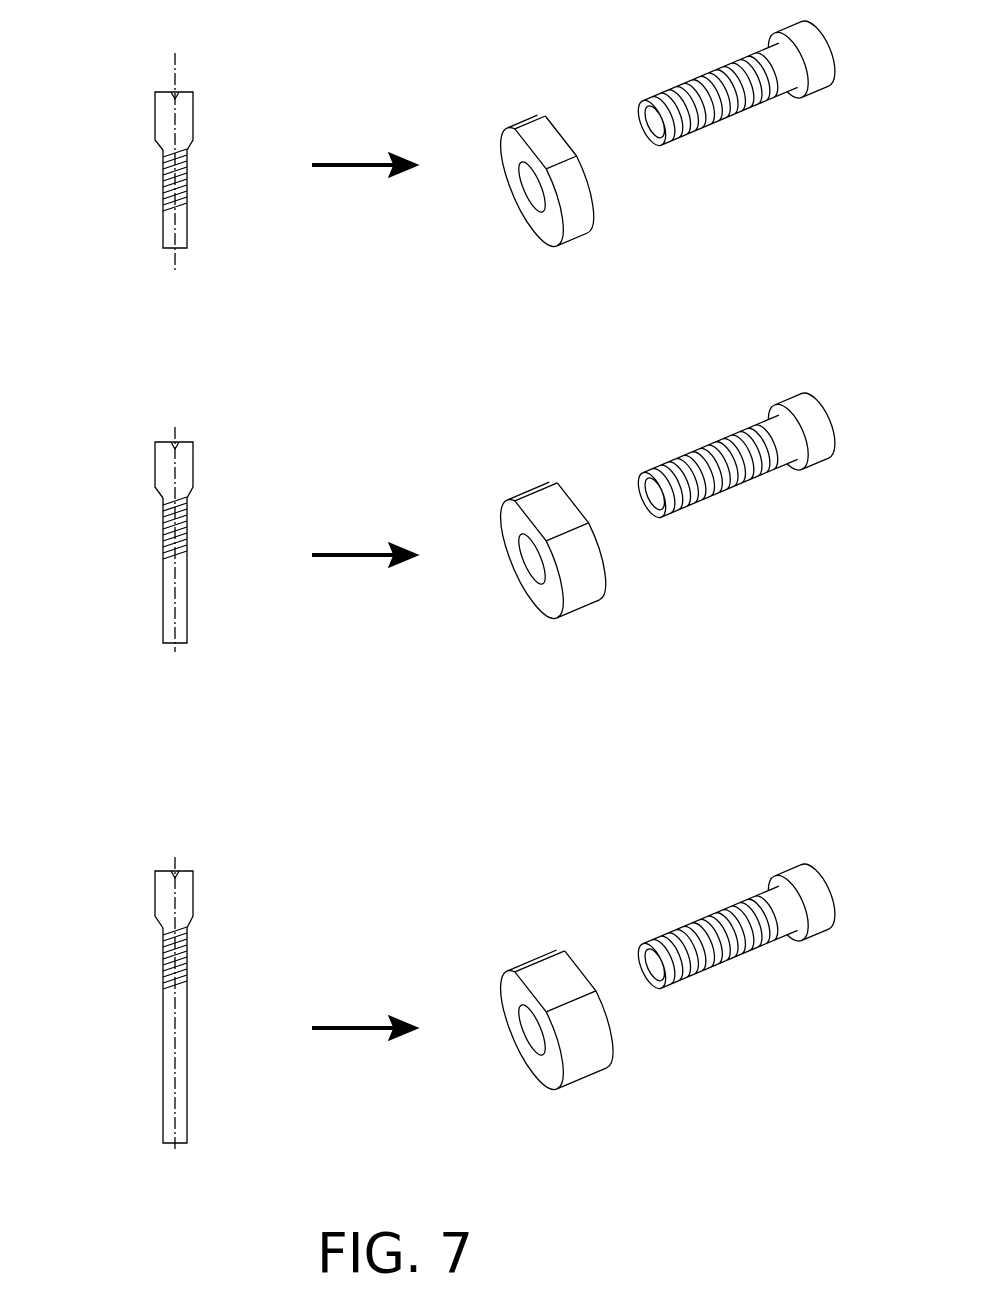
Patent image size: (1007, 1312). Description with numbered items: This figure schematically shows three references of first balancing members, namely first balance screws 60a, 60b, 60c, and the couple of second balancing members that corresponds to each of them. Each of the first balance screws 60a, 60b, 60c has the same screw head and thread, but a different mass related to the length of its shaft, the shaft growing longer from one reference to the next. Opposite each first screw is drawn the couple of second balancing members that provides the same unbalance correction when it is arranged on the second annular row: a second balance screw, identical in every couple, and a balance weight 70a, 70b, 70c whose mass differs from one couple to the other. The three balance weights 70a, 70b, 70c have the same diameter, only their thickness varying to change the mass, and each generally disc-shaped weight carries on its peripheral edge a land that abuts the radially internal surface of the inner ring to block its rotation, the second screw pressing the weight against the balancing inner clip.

The first balance screw 60a is at (129, 188).
The first balance screw 60b is at (162, 548).
The first balance screw 60c is at (198, 1007).
The balance weight 70a is at (491, 137).
The balance weight 70b is at (497, 509).
The balance weight 70c is at (500, 980).